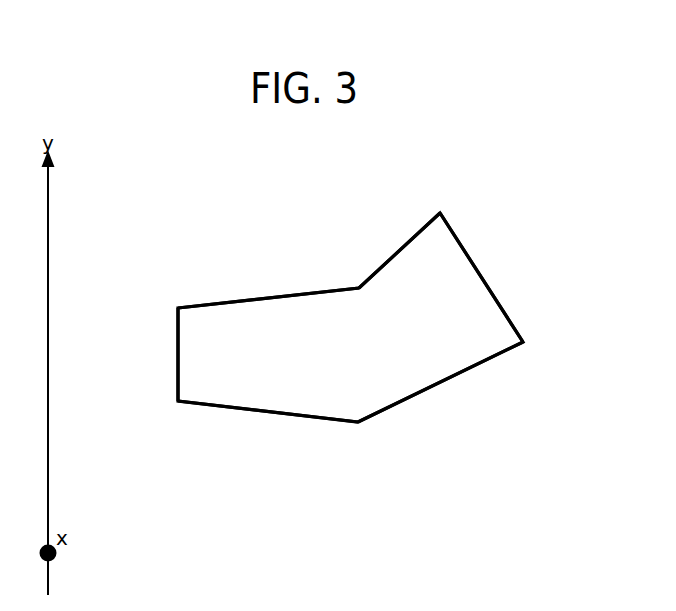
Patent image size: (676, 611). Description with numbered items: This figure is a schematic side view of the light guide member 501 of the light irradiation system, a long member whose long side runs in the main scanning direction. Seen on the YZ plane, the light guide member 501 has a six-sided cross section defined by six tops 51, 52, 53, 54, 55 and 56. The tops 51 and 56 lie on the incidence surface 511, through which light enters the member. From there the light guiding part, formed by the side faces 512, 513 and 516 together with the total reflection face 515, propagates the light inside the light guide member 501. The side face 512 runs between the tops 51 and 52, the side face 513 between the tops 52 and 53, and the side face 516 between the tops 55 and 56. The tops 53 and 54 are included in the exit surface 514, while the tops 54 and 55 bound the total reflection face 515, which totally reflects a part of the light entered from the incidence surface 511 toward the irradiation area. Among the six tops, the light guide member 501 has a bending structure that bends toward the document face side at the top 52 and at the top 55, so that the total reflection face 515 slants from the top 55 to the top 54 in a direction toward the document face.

The light guide member 501 is at (412, 396).
The top 51 is at (177, 307).
The top 52 is at (357, 287).
The top 53 is at (441, 212).
The top 54 is at (524, 343).
The top 55 is at (359, 424).
The top 56 is at (177, 403).
The incidence surface 511 is at (176, 358).
The side face 512 is at (271, 297).
The side face 513 is at (404, 245).
The exit surface 514 is at (483, 279).
The total reflection face 515 is at (483, 362).
The side face 516 is at (265, 412).